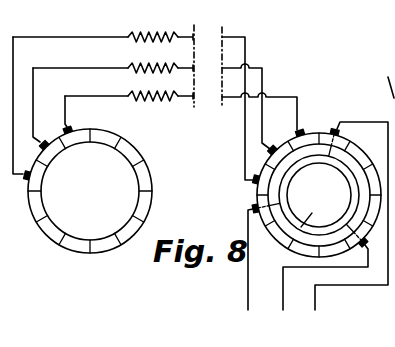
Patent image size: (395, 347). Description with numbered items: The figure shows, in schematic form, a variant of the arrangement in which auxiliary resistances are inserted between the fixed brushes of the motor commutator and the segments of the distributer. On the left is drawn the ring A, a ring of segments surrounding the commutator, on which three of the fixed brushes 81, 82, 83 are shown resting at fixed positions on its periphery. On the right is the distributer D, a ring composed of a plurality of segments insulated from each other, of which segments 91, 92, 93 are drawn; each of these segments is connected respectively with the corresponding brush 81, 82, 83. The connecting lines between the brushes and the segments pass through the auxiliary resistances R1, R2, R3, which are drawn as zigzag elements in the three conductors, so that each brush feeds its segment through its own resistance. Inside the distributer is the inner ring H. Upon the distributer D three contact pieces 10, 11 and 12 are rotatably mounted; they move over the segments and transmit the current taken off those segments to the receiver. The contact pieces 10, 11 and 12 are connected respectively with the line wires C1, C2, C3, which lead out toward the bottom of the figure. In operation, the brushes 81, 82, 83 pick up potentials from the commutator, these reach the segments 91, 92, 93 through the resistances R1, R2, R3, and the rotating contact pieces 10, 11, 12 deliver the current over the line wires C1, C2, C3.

The brush 81 is at (20, 120).
The brush 82 is at (45, 109).
The brush 83 is at (77, 115).
The segment 91 is at (240, 110).
The segment 92 is at (249, 114).
The segment 93 is at (263, 116).
The contact piece 10 is at (351, 212).
The contact piece 11 is at (338, 270).
The contact piece 12 is at (250, 253).
The resistor R1 is at (103, 31).
The resistor R2 is at (113, 62).
The resistor R3 is at (129, 90).
The machine A (commutator ring) A is at (90, 191).
The distributer D is at (319, 195).
The rotor winding H of machine D H is at (322, 213).
The line wire C1 is at (318, 322).
The line wire C2 is at (284, 324).
The line wire C3 is at (247, 323).